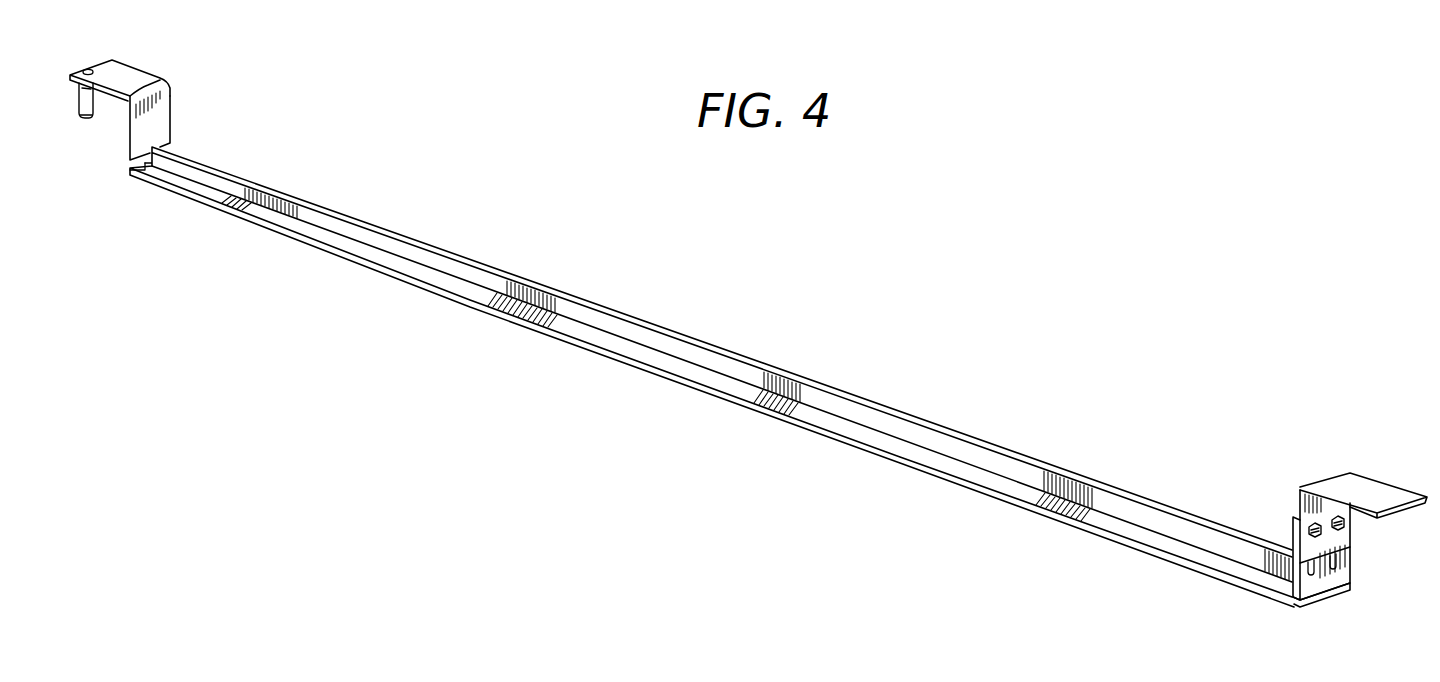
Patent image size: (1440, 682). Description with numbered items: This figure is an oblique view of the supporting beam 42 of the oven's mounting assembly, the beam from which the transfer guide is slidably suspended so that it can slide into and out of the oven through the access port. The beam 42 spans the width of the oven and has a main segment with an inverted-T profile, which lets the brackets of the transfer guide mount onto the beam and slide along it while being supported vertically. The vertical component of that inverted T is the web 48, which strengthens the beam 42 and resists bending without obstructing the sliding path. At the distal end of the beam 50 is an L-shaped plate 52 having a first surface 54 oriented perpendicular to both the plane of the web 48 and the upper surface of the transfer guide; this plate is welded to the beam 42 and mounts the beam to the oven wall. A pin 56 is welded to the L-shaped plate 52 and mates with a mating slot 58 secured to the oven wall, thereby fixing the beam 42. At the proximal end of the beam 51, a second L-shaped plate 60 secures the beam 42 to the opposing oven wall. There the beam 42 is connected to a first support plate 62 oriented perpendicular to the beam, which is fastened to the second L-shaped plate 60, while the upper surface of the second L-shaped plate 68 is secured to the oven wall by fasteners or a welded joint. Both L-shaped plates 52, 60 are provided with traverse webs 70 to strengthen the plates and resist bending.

The beam 42 is at (348, 245).
The web 48 is at (676, 342).
The distal end of the beam 50 is at (142, 170).
The proximal end of the beam 51 is at (1300, 607).
The L-shaped plate 52 is at (150, 78).
The first surface 54 is at (165, 114).
The pin 56 is at (93, 100).
The mating slot 58 is at (82, 117).
The second L-shaped plate 60 is at (1393, 497).
The first support plate 62 is at (1340, 571).
The upper surface of the second L-shaped plate 68 is at (1334, 487).
The traverse webs 70 is at (1334, 509).